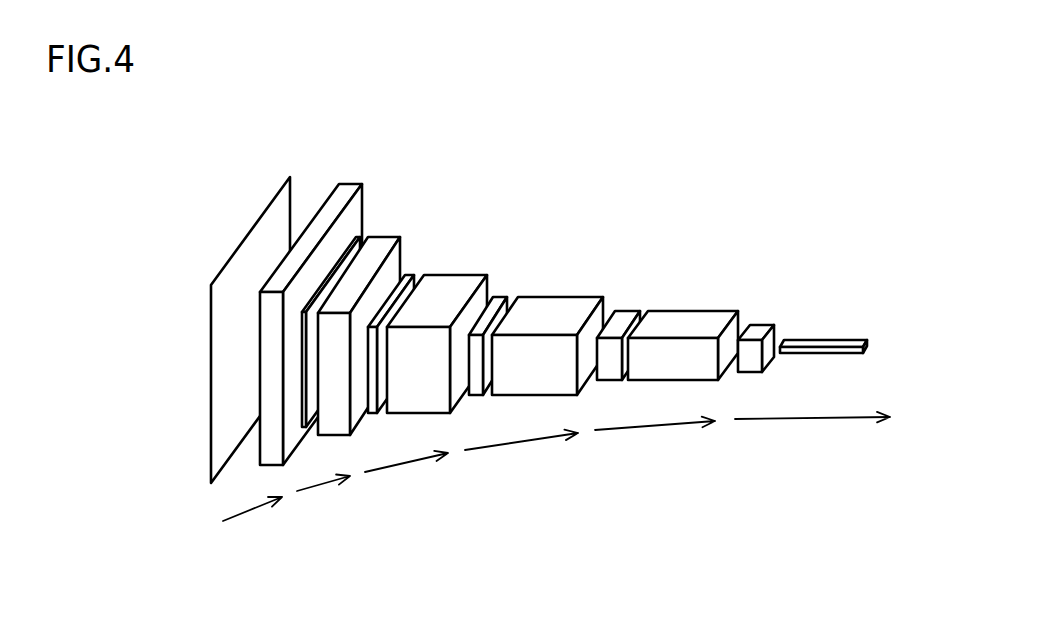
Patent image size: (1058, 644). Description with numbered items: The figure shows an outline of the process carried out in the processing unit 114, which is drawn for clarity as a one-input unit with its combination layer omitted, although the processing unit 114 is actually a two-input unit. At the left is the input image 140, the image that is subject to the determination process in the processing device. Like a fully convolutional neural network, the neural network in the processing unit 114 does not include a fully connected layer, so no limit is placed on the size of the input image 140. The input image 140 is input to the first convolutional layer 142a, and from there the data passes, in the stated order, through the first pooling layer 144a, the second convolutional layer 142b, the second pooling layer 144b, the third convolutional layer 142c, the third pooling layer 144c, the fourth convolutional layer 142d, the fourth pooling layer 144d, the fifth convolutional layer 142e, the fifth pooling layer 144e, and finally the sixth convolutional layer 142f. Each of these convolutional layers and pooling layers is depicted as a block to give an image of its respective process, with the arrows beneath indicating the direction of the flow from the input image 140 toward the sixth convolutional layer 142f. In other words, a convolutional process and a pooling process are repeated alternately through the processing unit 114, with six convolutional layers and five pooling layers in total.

The input image 140 is at (247, 233).
The first convolutional layer 142a is at (347, 188).
The first pooling layer 144a is at (354, 238).
The second convolutional layer 142b is at (382, 242).
The second pooling layer 144b is at (412, 262).
The third convolutional layer 142c is at (453, 283).
The third pooling layer 144c is at (500, 293).
The fourth convolutional layer 142d is at (538, 307).
The fourth pooling layer 144d is at (622, 308).
The fifth convolutional layer 142e is at (673, 323).
The fifth pooling layer 144e is at (758, 330).
The sixth convolutional layer 142f is at (842, 338).
The processing unit 114 is at (580, 598).